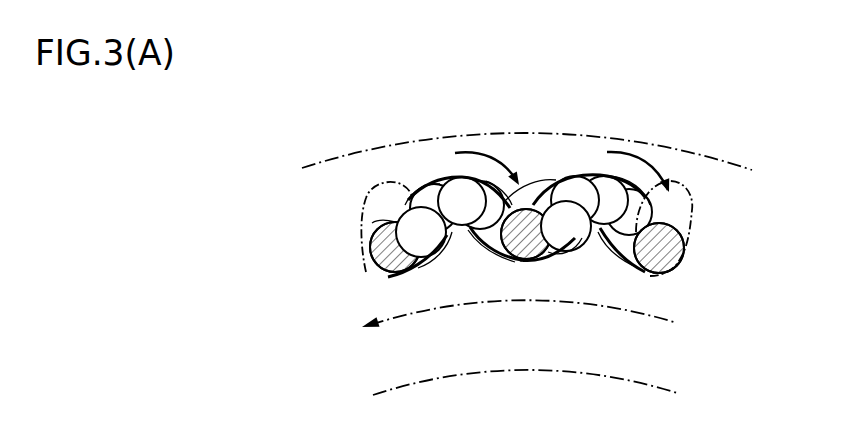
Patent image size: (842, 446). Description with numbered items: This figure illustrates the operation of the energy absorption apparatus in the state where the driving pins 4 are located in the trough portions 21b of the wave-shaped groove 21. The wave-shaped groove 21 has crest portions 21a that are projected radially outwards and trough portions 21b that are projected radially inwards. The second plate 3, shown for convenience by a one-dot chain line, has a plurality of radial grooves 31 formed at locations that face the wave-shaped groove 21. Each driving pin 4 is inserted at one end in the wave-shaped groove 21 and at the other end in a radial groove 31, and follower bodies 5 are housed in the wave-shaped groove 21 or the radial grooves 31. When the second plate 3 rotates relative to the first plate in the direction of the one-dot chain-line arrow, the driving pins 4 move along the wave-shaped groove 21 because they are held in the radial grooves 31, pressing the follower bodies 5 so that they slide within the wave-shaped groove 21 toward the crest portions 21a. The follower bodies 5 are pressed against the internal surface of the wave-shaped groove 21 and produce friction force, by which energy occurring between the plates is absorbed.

The second plate 3 is at (528, 372).
The driving pin 4 is at (686, 249).
The follower body 5 is at (572, 186).
The wave-shaped groove 21 is at (415, 181).
The crest portion 21a is at (600, 174).
The trough portion 21b is at (528, 205).
The radial groove 31 is at (693, 203).